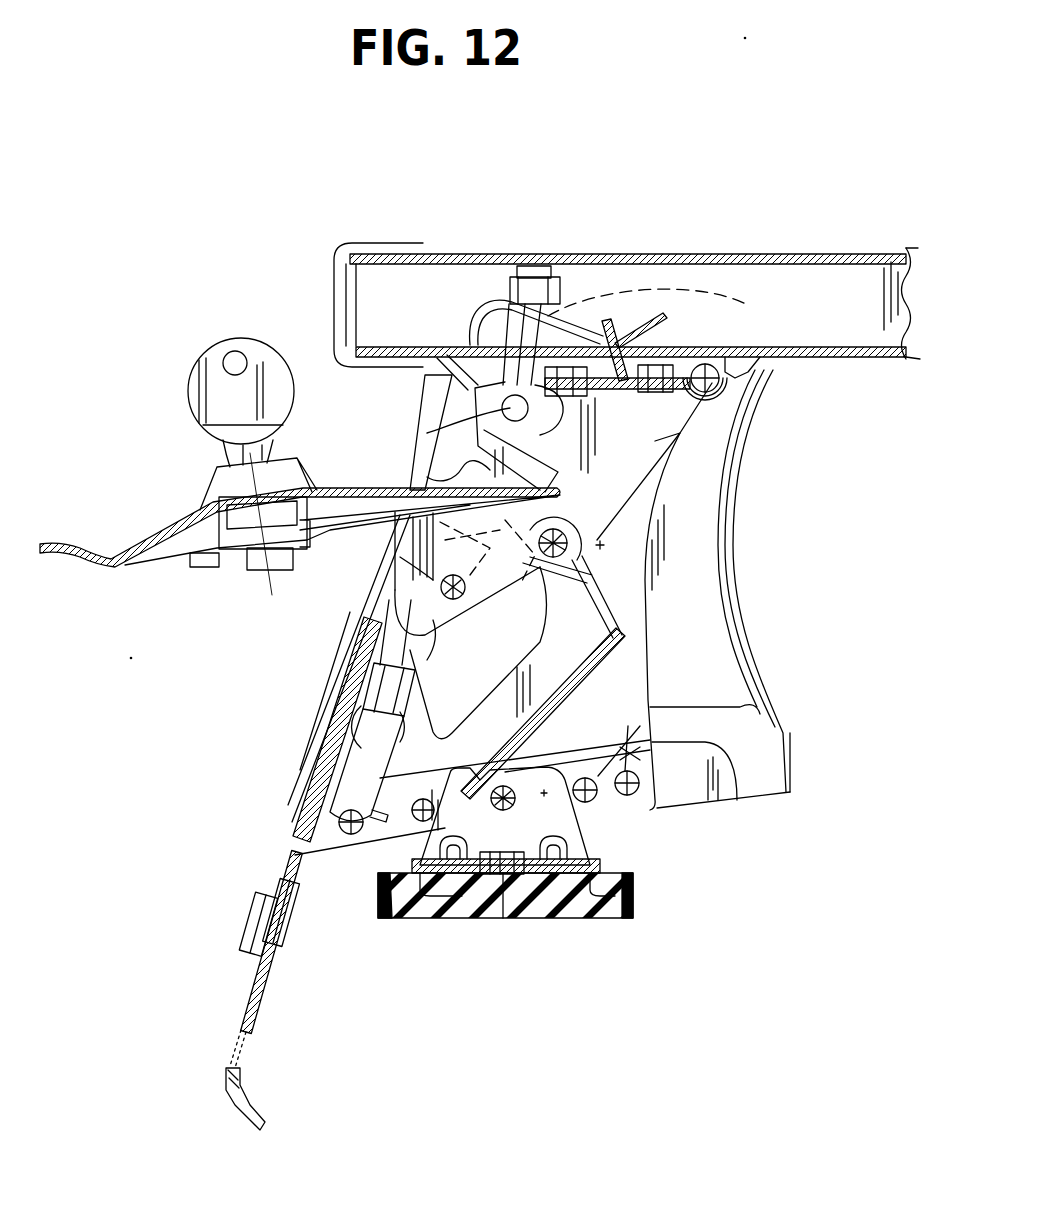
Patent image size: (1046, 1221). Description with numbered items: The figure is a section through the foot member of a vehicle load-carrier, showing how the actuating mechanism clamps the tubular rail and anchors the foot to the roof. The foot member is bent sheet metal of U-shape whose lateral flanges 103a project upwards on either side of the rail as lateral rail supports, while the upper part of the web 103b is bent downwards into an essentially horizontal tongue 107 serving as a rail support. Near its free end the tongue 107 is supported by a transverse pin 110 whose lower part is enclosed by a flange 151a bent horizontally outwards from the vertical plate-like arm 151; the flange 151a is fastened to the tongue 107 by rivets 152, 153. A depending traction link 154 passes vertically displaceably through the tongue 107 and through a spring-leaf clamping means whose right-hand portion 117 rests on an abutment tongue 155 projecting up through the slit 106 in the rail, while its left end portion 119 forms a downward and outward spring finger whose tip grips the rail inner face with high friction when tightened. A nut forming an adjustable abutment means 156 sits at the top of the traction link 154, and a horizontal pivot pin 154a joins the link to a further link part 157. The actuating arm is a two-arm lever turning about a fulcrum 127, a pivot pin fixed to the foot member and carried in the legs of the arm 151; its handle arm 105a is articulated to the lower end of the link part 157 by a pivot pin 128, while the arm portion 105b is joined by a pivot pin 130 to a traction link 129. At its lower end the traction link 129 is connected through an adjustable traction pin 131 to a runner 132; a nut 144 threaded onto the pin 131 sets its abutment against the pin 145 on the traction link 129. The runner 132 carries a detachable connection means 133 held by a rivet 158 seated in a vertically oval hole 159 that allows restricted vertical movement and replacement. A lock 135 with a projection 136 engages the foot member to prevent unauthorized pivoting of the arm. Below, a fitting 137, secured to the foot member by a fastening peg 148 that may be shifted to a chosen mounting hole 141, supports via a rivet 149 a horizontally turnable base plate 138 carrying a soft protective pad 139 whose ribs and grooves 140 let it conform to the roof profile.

The lateral flanges 103a is at (742, 322).
The web portion 103b is at (378, 582).
The arm 105a is at (157, 538).
The actuating arm portion 105b is at (500, 572).
The slit 106 is at (437, 350).
The tongue 107 is at (625, 380).
The transverse pin 110 is at (727, 370).
The right-hand portion of clamping means 117 is at (612, 318).
The end portion of clamping means 119 is at (500, 335).
The fulcrum 127 is at (458, 599).
The pivot pin 128 is at (415, 669).
The traction link 129 is at (568, 686).
The pivot pin 130 is at (570, 515).
The traction pin 131 is at (333, 768).
The runner 132 is at (300, 880).
The connection means 133 is at (228, 1076).
The lock 135 is at (212, 488).
The projection 136 is at (215, 567).
The fitting 137 is at (592, 848).
The base plate 138 is at (603, 918).
The protective pad 139 is at (530, 918).
The ribs and grooves 140 is at (470, 918).
The mounting hole 141 is at (640, 726).
The nut 144 is at (362, 668).
The pin 145 is at (352, 724).
The fastening peg 148 is at (512, 804).
The rivet 149 is at (497, 852).
The arm 151 is at (660, 442).
The flange 151a is at (735, 387).
The rivet 152 is at (693, 368).
The rivet 153 is at (603, 335).
The traction link 154 is at (480, 308).
The pivot pin 154a is at (427, 433).
The abutment tongue 155 is at (665, 380).
The abutment means 156 is at (540, 290).
The link part 157 is at (427, 477).
The rivet 158 is at (258, 923).
The hole 159 is at (277, 897).